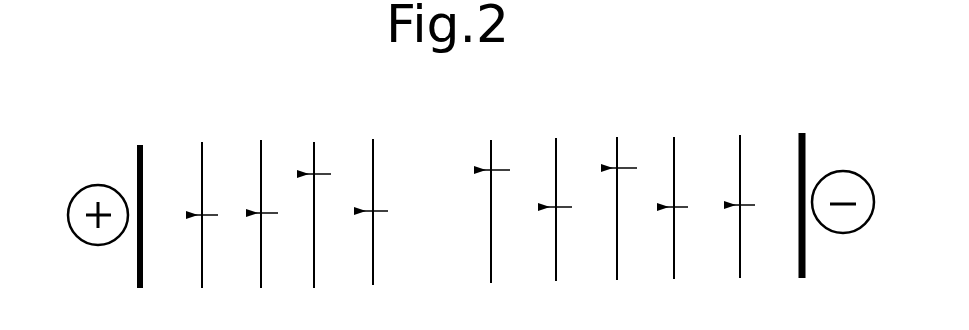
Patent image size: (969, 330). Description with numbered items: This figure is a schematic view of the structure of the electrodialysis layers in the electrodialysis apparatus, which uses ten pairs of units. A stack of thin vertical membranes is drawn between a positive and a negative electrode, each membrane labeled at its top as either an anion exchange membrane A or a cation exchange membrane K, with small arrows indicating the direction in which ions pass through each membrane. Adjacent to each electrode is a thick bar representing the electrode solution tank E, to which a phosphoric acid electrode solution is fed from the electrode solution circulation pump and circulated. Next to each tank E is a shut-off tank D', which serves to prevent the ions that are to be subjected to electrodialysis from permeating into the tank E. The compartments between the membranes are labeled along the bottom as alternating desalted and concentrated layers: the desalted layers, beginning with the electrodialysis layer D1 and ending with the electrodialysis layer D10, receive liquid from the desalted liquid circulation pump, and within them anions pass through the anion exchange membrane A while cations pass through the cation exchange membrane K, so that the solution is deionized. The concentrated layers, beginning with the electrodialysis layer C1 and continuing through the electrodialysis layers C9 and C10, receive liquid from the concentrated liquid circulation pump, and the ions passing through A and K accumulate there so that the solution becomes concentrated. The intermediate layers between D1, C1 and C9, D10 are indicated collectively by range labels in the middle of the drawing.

The anion exchange membrane A is at (470, 213).
The cation exchange membrane K is at (484, 213).
The electrode solution tank E is at (471, 227).
The shut-off tank D' is at (470, 228).
The electrodialysis layer D1 is at (274, 230).
The electrodialysis layer C1 is at (328, 231).
The electrodialysis layer C9 is at (508, 230).
The electrodialysis layer D10 is at (576, 229).
The electrodialysis layer C10 is at (636, 229).